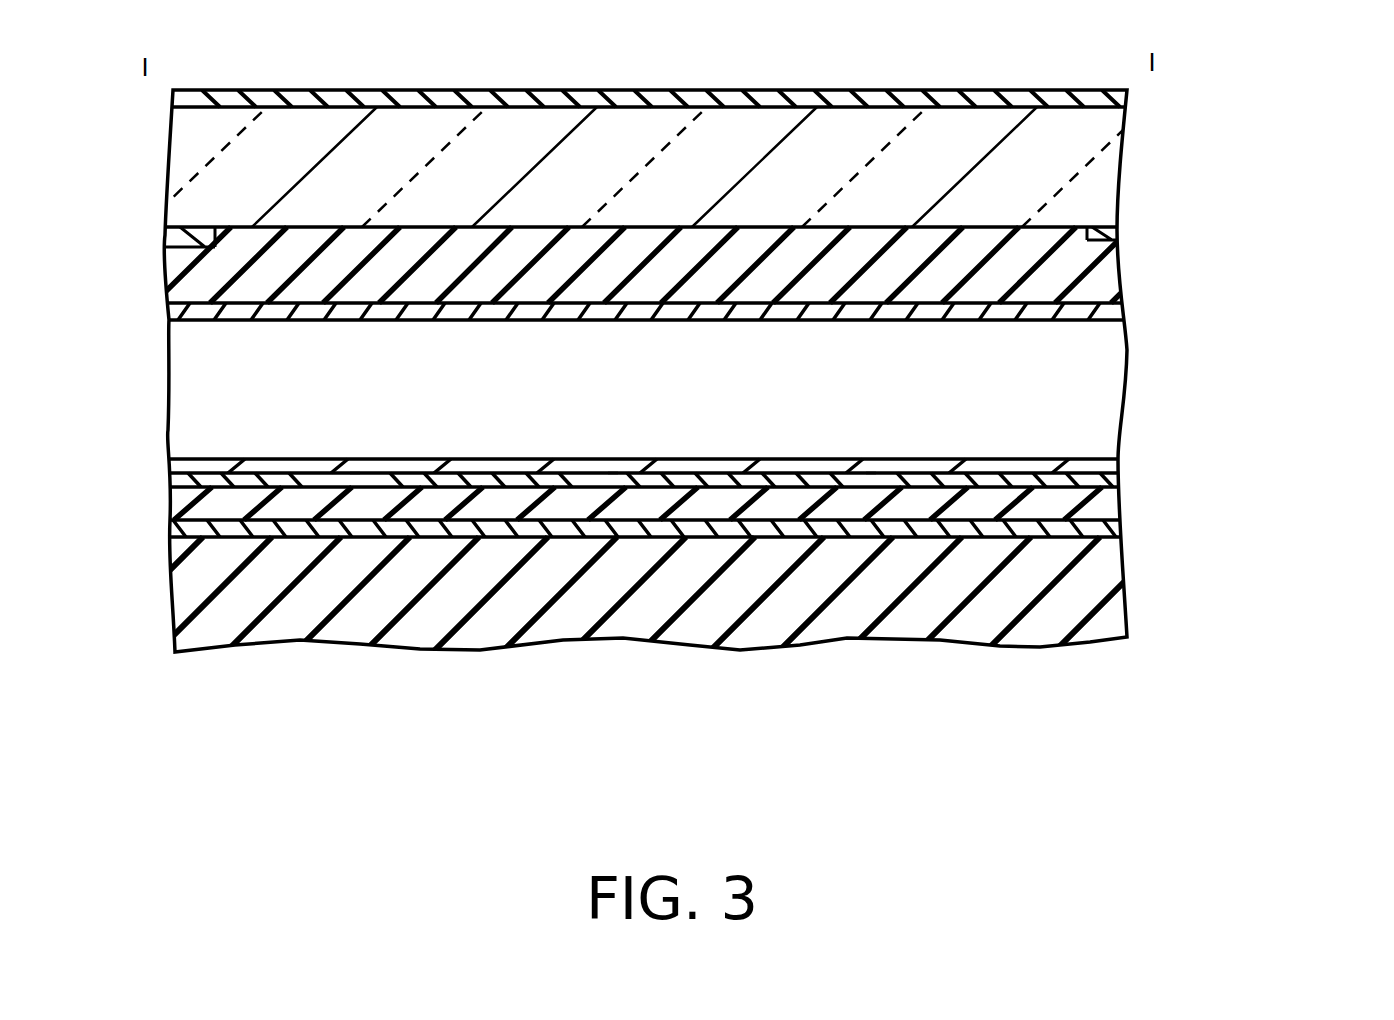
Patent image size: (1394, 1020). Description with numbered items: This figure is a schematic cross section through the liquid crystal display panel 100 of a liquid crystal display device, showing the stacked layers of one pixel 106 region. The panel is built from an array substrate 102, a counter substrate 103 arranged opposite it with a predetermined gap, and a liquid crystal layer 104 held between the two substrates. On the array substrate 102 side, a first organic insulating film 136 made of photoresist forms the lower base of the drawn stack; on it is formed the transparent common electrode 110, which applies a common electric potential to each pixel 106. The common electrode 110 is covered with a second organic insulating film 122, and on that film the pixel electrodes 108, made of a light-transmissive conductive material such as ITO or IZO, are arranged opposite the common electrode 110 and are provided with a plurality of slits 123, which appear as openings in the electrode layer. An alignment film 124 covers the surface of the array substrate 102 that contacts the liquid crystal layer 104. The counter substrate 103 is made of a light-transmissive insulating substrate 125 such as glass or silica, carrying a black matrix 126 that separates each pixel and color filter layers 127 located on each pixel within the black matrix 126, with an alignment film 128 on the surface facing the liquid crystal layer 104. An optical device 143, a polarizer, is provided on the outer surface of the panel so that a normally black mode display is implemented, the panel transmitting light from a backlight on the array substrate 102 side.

The liquid crystal display panel 100 is at (1273, 167).
The array substrate 102 is at (1140, 545).
The counter substrate 103 is at (1140, 210).
The liquid crystal layer 104 is at (193, 385).
The pixel 106 is at (651, 682).
The pixel electrode 108 is at (175, 483).
The common electrode 110 is at (175, 531).
The second organic insulating film 122 is at (175, 502).
The slit 123 is at (348, 462).
The alignment film 124 is at (175, 468).
The insulating substrate 125 is at (185, 150).
The black matrix 126 is at (173, 240).
The color filter layer 127 is at (173, 267).
The alignment film 128 is at (170, 313).
The first organic insulating film 136 is at (185, 600).
The optical device 143 is at (175, 94).